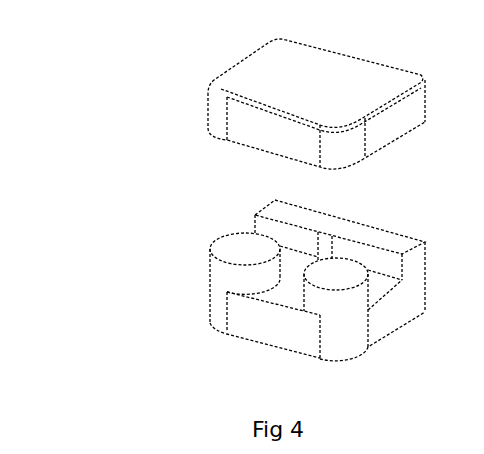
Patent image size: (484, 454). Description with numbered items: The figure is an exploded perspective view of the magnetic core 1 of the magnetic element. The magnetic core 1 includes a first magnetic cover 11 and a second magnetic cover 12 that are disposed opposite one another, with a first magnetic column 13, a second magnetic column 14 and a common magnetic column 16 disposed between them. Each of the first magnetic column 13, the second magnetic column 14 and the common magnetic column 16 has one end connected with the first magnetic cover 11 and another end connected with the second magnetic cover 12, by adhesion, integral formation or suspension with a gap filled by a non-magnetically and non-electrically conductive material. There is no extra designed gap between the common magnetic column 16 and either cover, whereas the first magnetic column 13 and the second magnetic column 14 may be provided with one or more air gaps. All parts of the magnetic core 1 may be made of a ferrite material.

The magnetic core 1 is at (128, 147).
The first magnetic cover 11 is at (312, 288).
The second magnetic cover 12 is at (353, 70).
The first magnetic column 13 is at (232, 251).
The second magnetic column 14 is at (362, 275).
The common magnetic column 16 is at (343, 228).